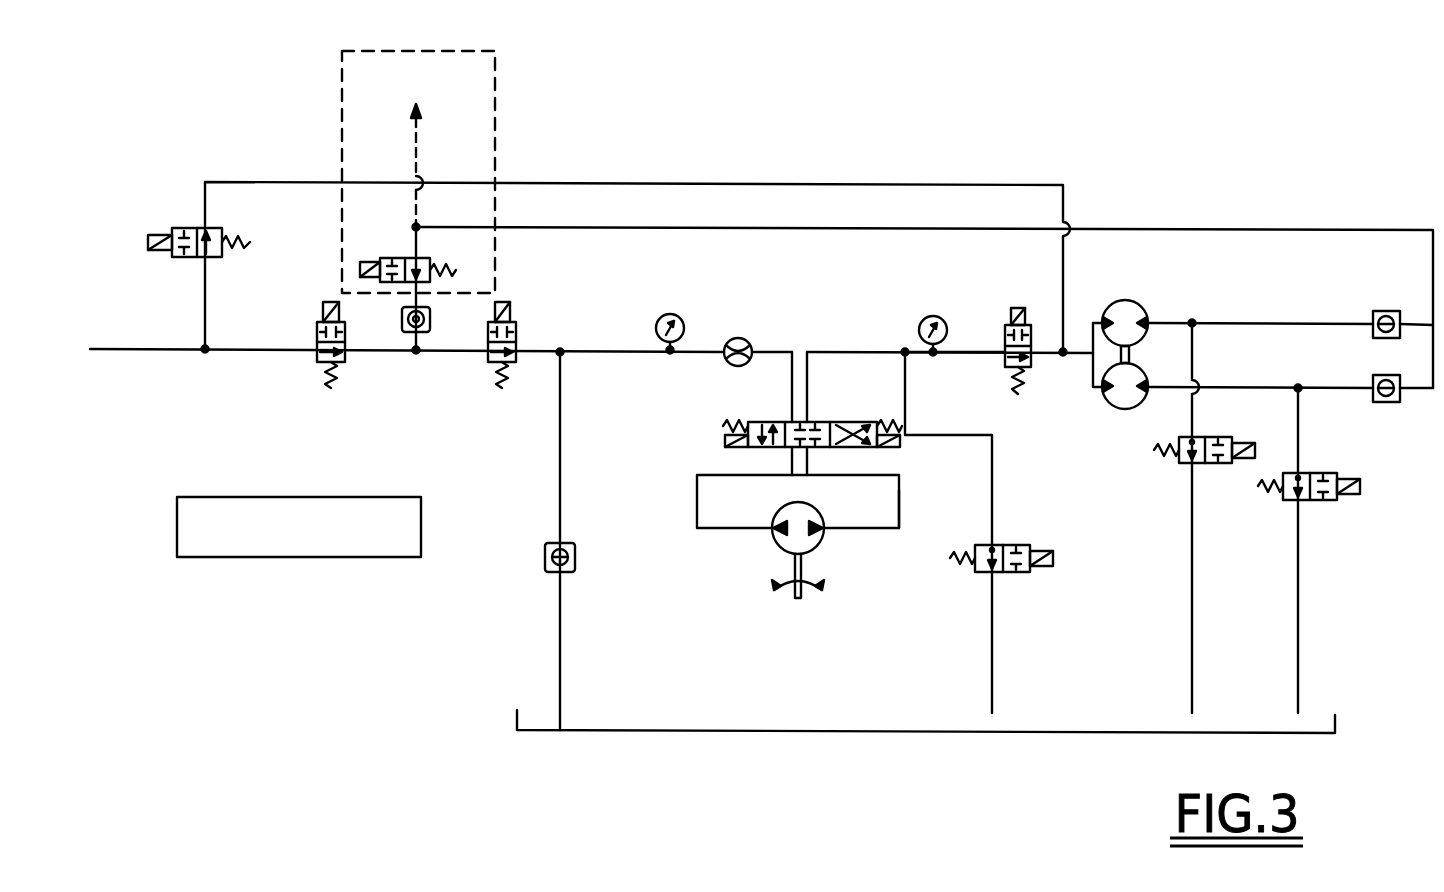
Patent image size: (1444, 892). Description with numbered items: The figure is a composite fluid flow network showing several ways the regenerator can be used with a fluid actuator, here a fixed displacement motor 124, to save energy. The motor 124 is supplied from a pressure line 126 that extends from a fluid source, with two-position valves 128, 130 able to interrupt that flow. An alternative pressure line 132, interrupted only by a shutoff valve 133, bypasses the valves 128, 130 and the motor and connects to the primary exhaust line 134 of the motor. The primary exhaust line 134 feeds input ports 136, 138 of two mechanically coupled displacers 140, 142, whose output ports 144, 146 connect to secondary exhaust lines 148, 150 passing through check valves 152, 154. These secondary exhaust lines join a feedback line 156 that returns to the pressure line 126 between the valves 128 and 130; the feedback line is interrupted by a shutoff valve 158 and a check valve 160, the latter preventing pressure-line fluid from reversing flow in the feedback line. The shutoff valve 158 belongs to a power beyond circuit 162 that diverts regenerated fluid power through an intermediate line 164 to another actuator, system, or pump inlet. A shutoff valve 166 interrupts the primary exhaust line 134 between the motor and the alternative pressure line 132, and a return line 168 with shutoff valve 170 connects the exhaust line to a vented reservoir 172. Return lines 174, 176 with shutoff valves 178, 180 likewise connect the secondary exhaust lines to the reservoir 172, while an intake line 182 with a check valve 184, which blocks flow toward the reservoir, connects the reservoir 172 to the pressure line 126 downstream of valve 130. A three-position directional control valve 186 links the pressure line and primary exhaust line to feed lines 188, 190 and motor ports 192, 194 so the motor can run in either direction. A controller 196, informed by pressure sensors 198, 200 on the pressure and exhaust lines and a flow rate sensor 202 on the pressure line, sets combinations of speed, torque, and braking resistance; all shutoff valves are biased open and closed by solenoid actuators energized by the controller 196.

The fixed displacement motor 124 is at (784, 507).
The pressure line 126 is at (176, 352).
The two-position valve 128 is at (346, 362).
The two-position valve 130 is at (488, 362).
The alternative pressure line 132 is at (731, 184).
The shutoff valve 133 is at (175, 228).
The primary exhaust line 134 is at (930, 355).
The input port 136 is at (1106, 303).
The input port 138 is at (1104, 394).
The displacer 140 is at (1128, 299).
The displacer 142 is at (1116, 407).
The output port 144 is at (1150, 316).
The output port 146 is at (1147, 400).
The secondary exhaust line 148 is at (1310, 324).
The secondary exhaust line 150 is at (1320, 388).
The check valve 152 is at (1380, 311).
The check valve 154 is at (1380, 402).
The feedback line 156 is at (942, 228).
The shutoff valve 158 is at (400, 258).
The check valve 160 is at (402, 326).
The power beyond circuit 162 is at (342, 110).
The intermediate line 164 is at (416, 140).
The shutoff valve 166 is at (1008, 326).
The return line 168 is at (992, 497).
The shutoff valve 170 is at (1012, 574).
The vented reservoir 172 is at (752, 733).
The return line 174 is at (1192, 597).
The return line 176 is at (1298, 620).
The shutoff valve 178 is at (1186, 465).
The shutoff valve 180 is at (1330, 502).
The intake line 182 is at (560, 511).
The check valve 184 is at (575, 562).
The three-position directional control valve 186 is at (760, 422).
The feed line 188 is at (697, 494).
The feed line 190 is at (899, 502).
The motor port 192 is at (774, 541).
The motor port 194 is at (822, 541).
The controller 196 is at (350, 558).
The pressure sensor 198 is at (662, 318).
The pressure sensor 200 is at (920, 322).
The flow rate sensor 202 is at (738, 338).